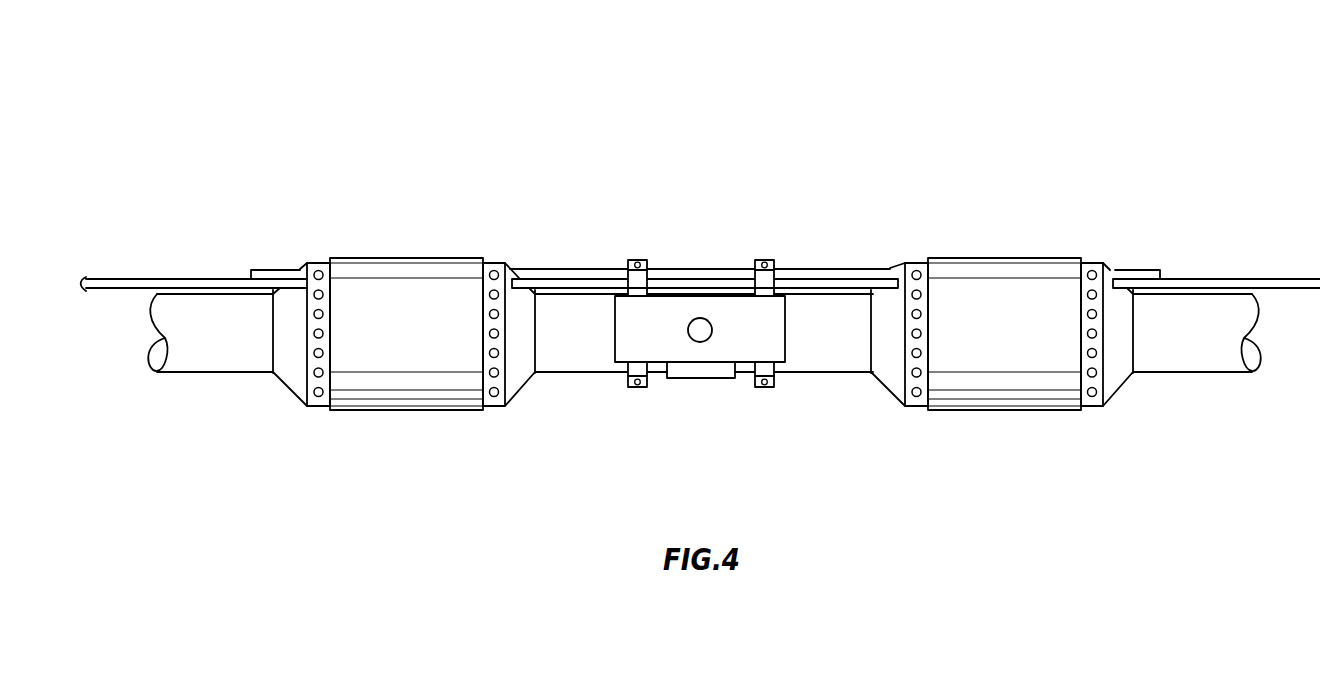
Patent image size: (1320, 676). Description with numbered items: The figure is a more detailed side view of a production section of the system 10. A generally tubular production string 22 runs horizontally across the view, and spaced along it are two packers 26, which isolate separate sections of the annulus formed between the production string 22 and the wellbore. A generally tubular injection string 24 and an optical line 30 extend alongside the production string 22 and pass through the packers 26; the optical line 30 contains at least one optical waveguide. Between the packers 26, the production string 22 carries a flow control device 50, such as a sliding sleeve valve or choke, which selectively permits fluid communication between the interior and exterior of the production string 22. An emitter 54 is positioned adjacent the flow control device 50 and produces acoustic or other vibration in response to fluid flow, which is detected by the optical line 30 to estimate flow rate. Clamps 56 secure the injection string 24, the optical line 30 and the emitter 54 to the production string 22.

The system 10 is at (1063, 127).
The production string 22 is at (170, 373).
The injection string 24 is at (255, 263).
The packers 26 is at (420, 410).
The optical line 30 is at (153, 278).
The flow control device 50 is at (707, 378).
The emitter 54 is at (785, 345).
The clamps 56 is at (642, 262).